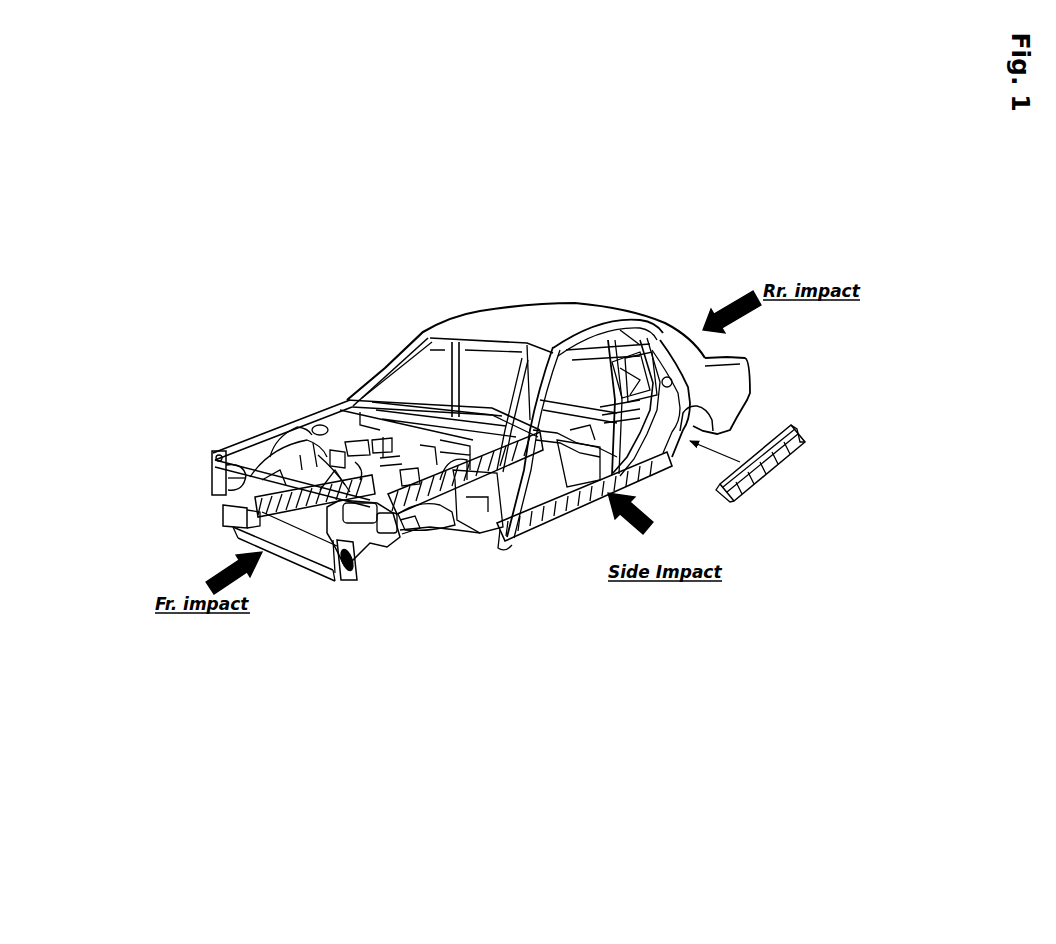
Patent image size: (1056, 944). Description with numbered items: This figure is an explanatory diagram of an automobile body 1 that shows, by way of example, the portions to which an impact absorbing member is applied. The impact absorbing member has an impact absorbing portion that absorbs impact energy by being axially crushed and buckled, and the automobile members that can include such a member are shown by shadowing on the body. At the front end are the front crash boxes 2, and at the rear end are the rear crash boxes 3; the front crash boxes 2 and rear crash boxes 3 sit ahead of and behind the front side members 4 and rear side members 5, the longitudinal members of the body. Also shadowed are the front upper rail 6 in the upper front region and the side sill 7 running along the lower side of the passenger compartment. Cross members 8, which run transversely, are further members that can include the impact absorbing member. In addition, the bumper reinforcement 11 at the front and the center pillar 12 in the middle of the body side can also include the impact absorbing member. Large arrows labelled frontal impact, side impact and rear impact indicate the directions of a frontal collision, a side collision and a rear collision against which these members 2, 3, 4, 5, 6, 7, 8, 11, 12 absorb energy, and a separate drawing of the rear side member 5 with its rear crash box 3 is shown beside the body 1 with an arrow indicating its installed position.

The vehicle body 1 is at (348, 305).
The front crash box 2 is at (212, 476).
The rear crash box 3 is at (803, 436).
The front side member 4 is at (310, 522).
The rear side member 5 is at (762, 487).
The front upper rail 6 is at (432, 514).
The side sill 7 is at (557, 530).
The cross member 8 is at (288, 557).
The bumper reinforcement 11 is at (231, 535).
The center pillar 12 is at (621, 368).